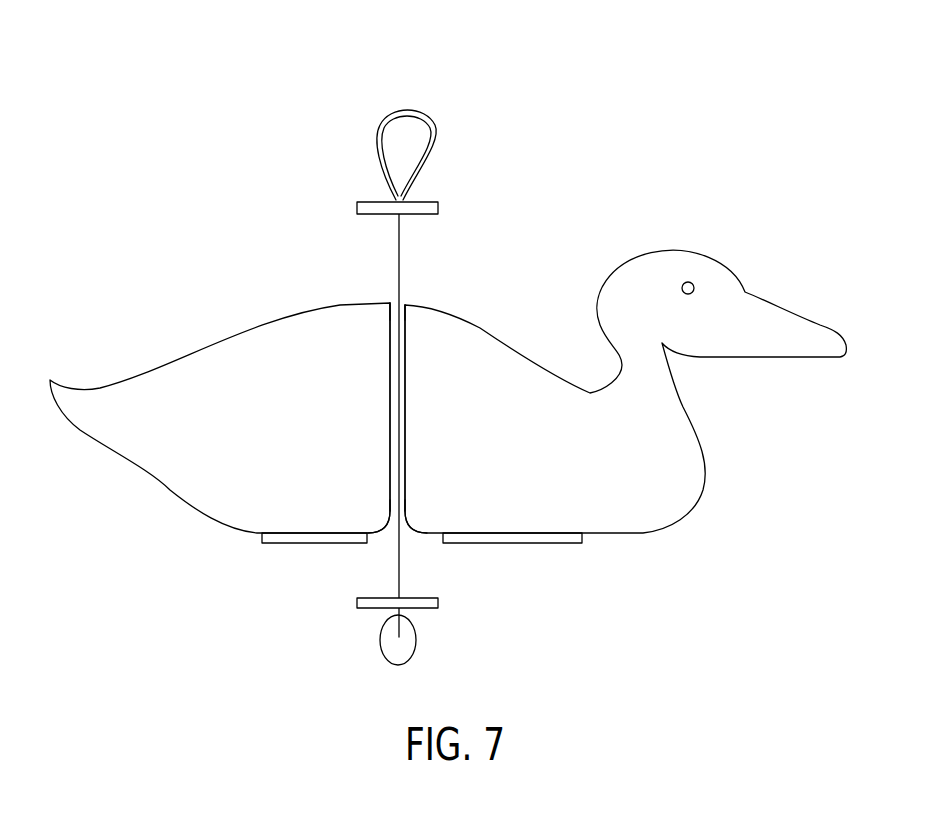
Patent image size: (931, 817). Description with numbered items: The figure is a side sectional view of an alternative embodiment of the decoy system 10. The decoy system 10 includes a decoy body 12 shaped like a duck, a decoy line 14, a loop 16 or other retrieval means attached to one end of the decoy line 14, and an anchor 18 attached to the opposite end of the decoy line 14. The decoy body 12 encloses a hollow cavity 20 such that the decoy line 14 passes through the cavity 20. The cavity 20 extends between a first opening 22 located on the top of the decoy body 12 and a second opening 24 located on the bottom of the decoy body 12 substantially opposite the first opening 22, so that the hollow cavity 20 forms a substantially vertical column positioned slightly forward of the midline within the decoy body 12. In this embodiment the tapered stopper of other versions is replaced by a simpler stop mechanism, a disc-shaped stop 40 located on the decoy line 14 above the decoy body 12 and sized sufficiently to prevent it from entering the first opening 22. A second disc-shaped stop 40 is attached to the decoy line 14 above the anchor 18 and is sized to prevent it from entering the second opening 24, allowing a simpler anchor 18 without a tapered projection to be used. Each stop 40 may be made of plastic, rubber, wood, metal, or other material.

The decoy system 10 is at (730, 67).
The decoy body 12 is at (685, 488).
The decoy line 14 is at (399, 248).
The loop 16 is at (435, 128).
The anchor 18 is at (394, 655).
The hollow cavity 20 is at (392, 381).
The first opening 22 is at (401, 298).
The second opening 24 is at (392, 522).
The disc-shaped stop 40 is at (438, 208).